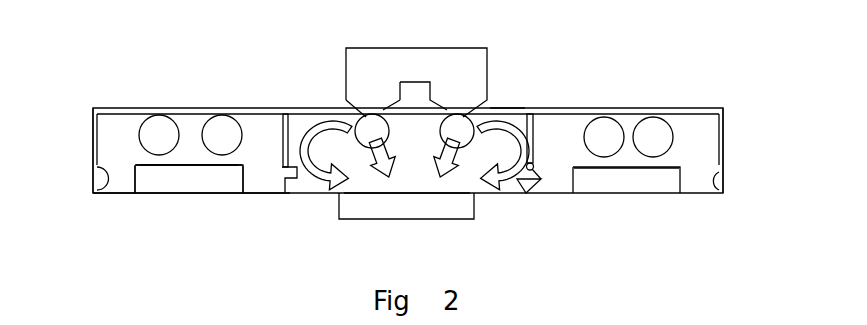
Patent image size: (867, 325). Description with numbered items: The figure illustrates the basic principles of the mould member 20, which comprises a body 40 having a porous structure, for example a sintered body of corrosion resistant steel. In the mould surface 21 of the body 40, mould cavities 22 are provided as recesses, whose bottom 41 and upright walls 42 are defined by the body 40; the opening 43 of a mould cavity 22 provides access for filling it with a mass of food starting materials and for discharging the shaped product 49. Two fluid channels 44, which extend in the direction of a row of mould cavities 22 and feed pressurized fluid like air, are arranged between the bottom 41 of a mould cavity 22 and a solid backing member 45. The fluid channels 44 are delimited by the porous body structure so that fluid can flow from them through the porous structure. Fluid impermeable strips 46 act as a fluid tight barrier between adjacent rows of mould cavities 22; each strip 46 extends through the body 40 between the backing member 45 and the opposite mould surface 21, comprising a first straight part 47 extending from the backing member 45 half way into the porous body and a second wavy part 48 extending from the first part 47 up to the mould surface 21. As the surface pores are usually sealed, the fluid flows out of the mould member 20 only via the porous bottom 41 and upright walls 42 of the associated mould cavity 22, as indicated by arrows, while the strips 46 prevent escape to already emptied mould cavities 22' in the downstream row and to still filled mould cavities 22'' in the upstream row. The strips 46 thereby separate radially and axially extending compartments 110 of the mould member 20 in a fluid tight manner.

The mould member 20 is at (131, 73).
The mould surface 21 is at (106, 194).
The mould cavity 22 is at (406, 224).
The already emptied mould cavity 22' is at (651, 215).
The still filled mould cavity 22'' is at (178, 226).
The body 40 is at (100, 132).
The bottom 41 is at (143, 164).
The upright walls 42 is at (136, 178).
The opening 43 is at (617, 198).
The fluid channels 44 is at (158, 116).
The backing member 45 is at (507, 110).
The fluid impermeable strips 46 is at (283, 170).
The first straight part 47 is at (537, 155).
The second wavy part 48 is at (541, 181).
The shaped product 49 is at (200, 182).
The compartments 110 is at (702, 125).